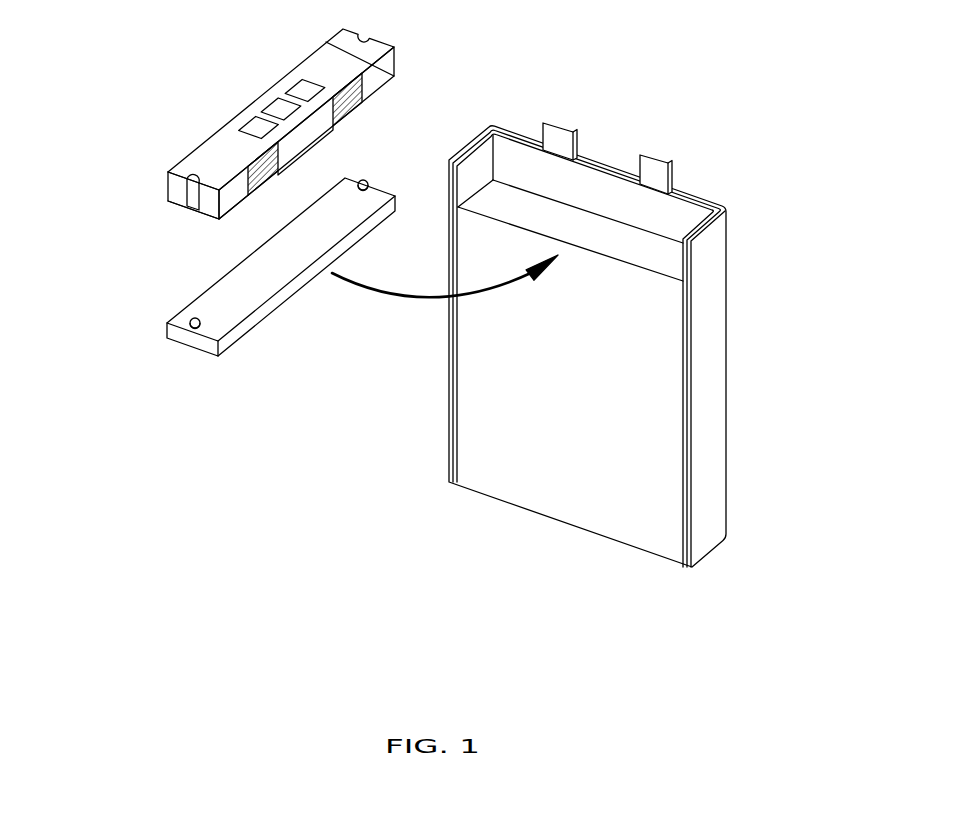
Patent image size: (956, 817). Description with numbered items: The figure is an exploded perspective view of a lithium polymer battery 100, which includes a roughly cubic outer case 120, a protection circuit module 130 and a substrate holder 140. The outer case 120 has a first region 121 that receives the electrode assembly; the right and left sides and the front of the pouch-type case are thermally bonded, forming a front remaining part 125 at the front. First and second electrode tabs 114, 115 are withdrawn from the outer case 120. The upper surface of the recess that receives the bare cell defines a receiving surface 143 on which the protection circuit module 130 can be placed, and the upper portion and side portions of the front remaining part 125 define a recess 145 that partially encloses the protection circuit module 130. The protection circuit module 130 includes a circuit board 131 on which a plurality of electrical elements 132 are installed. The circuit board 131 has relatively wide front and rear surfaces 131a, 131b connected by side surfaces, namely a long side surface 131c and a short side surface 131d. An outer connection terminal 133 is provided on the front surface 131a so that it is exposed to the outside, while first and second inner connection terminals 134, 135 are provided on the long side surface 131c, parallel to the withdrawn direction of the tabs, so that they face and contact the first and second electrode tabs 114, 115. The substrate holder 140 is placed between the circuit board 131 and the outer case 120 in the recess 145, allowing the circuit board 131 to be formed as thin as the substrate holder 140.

The lithium polymer battery 100 is at (183, 44).
The outer case 120 is at (758, 310).
The first region 121 is at (553, 490).
The front remaining part 125 is at (672, 213).
The first electrode tab 114 is at (556, 137).
The second electrode tab 115 is at (652, 165).
The receiving surface 143 is at (488, 198).
The recess 145 is at (584, 206).
The protection circuit module 130 is at (185, 117).
The circuit board 131 is at (85, 150).
The front surface 131a is at (193, 165).
The rear surface 131b is at (232, 212).
The long side surface 131c is at (223, 203).
The short side surface 131d is at (175, 185).
The electrical element 132 is at (312, 145).
The outer connection terminal 133 is at (298, 87).
The first inner connection terminal 134 is at (355, 108).
The second inner connection terminal 135 is at (268, 181).
The substrate holder 140 is at (203, 307).